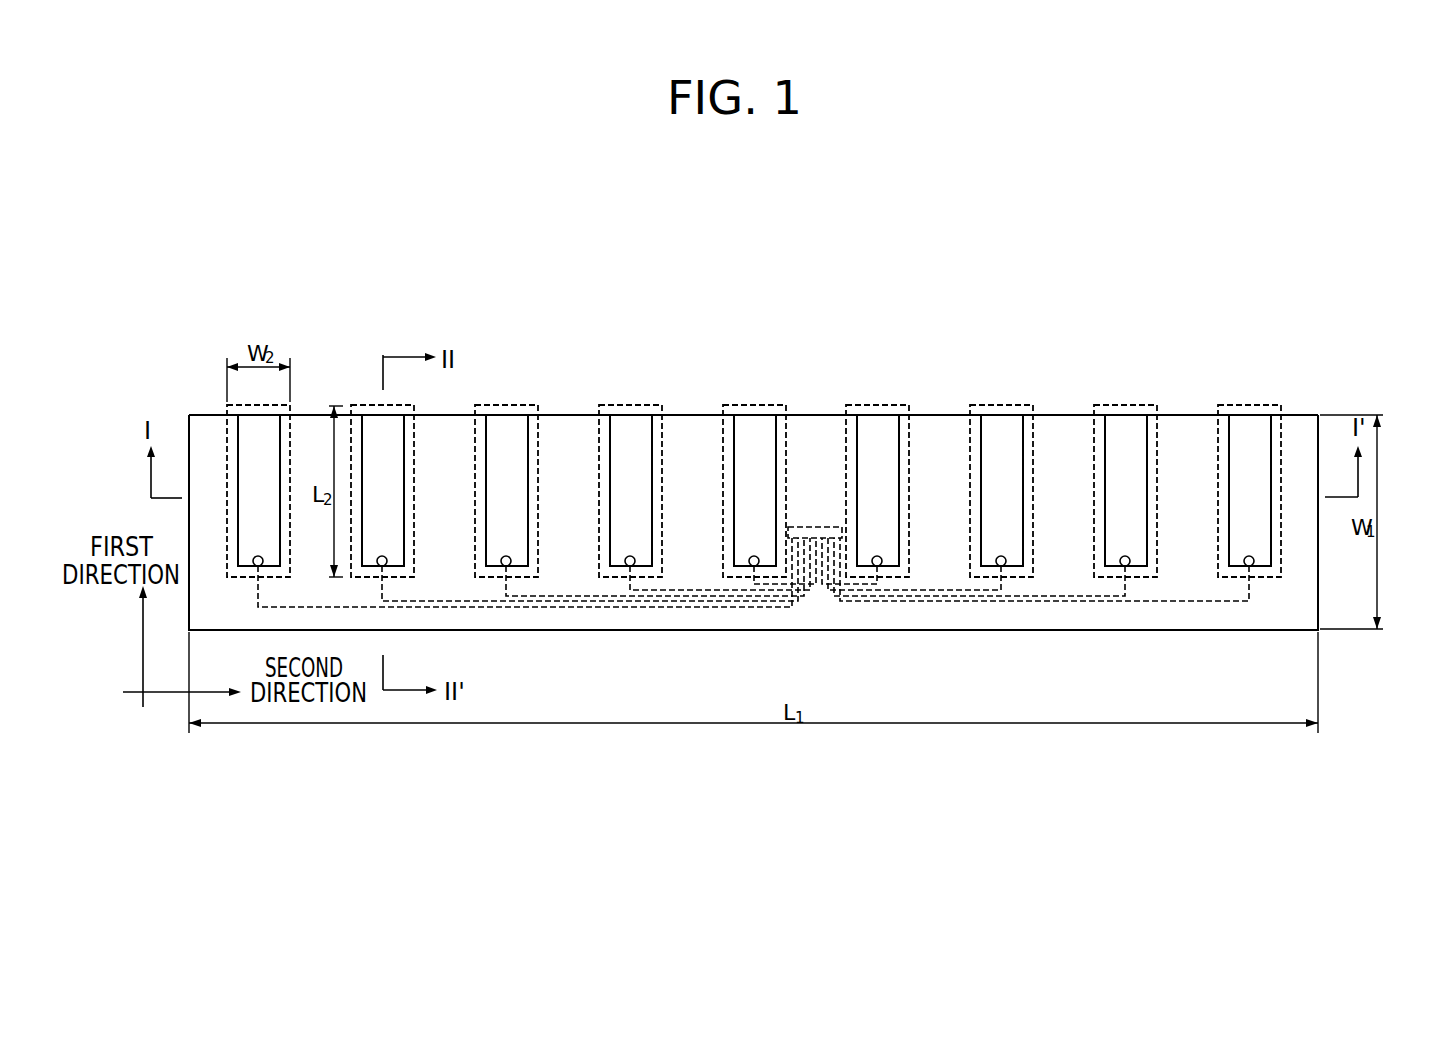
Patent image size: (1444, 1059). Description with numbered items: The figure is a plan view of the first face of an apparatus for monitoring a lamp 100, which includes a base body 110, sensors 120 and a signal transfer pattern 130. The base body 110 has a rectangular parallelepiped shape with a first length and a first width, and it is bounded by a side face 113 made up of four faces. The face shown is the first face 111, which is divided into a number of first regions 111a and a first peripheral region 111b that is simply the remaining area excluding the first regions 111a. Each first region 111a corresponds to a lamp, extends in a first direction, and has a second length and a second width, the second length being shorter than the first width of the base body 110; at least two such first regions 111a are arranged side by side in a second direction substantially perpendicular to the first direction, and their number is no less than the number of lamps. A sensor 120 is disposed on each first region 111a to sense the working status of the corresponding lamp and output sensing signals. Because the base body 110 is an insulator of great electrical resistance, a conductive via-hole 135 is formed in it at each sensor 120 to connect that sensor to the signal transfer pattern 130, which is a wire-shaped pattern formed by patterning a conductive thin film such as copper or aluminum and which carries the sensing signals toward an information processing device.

The apparatus for monitoring a lamp 100 is at (832, 336).
The base body 110 is at (1330, 608).
The first face 111 is at (203, 431).
The first region 111a is at (504, 404).
The first peripheral region 111b is at (565, 422).
The side face 113 is at (948, 414).
The sensor 120 is at (754, 430).
The signal transfer pattern 130 is at (1198, 603).
The conductive via-hole 135 is at (633, 567).